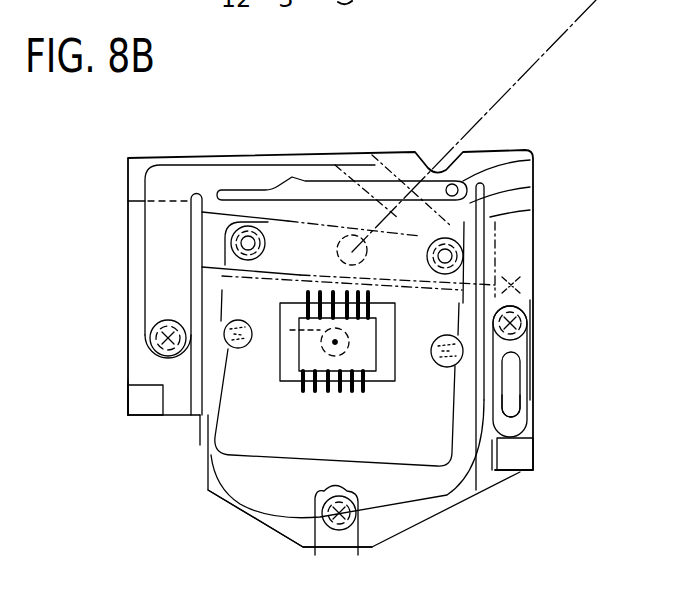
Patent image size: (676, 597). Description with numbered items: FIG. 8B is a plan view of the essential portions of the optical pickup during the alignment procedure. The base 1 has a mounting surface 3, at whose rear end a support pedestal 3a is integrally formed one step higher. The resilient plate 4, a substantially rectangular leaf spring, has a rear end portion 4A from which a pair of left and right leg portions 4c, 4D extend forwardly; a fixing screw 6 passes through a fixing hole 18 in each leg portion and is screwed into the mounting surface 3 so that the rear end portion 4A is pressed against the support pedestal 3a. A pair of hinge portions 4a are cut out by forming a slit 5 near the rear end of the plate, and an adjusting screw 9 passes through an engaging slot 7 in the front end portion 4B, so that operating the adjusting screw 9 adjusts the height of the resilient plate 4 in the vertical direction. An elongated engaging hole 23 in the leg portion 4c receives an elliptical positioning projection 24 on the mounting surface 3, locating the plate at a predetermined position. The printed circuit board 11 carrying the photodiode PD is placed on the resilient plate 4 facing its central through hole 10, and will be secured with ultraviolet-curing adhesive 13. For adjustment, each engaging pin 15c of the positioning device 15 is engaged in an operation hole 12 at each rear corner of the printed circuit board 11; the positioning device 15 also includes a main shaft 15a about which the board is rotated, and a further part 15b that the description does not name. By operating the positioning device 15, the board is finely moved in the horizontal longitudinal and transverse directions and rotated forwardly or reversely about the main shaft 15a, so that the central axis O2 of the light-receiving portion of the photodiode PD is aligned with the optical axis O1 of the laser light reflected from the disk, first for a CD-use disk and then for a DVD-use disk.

The base 1 is at (122, 416).
The mounting surface 3 is at (476, 483).
The support pedestal 3a is at (258, 157).
The resilient plate 4 is at (459, 494).
The rear end portion 4A is at (318, 166).
The front end portion 4B is at (257, 518).
The leg portion 4D is at (163, 219).
The hinge portions 4a is at (208, 195).
The leg portion 4c is at (518, 238).
The slit 5 is at (442, 183).
The fixing screw 6 is at (152, 333).
The engaging slot 7 is at (318, 540).
The adjusting screw 9 is at (345, 531).
The central through hole 10 is at (295, 335).
The printed circuit board 11 is at (212, 458).
The operation hole 12 is at (520, 182).
The ultraviolet-curing adhesive 13 is at (237, 352).
The positioning device 15 is at (497, 256).
The main shaft 15a is at (352, 243).
The plate portion 15b is at (537, 222).
The engaging pin 15c is at (205, 258).
The fixing hole 18 is at (147, 355).
The elongated engaging hole 23 is at (518, 403).
The elliptical positioning projection 24 is at (513, 366).
The photodiode PD is at (367, 330).
The central axis of the photodiode O2 is at (335, 355).
The optical axis of the laser light O1 is at (335, 342).